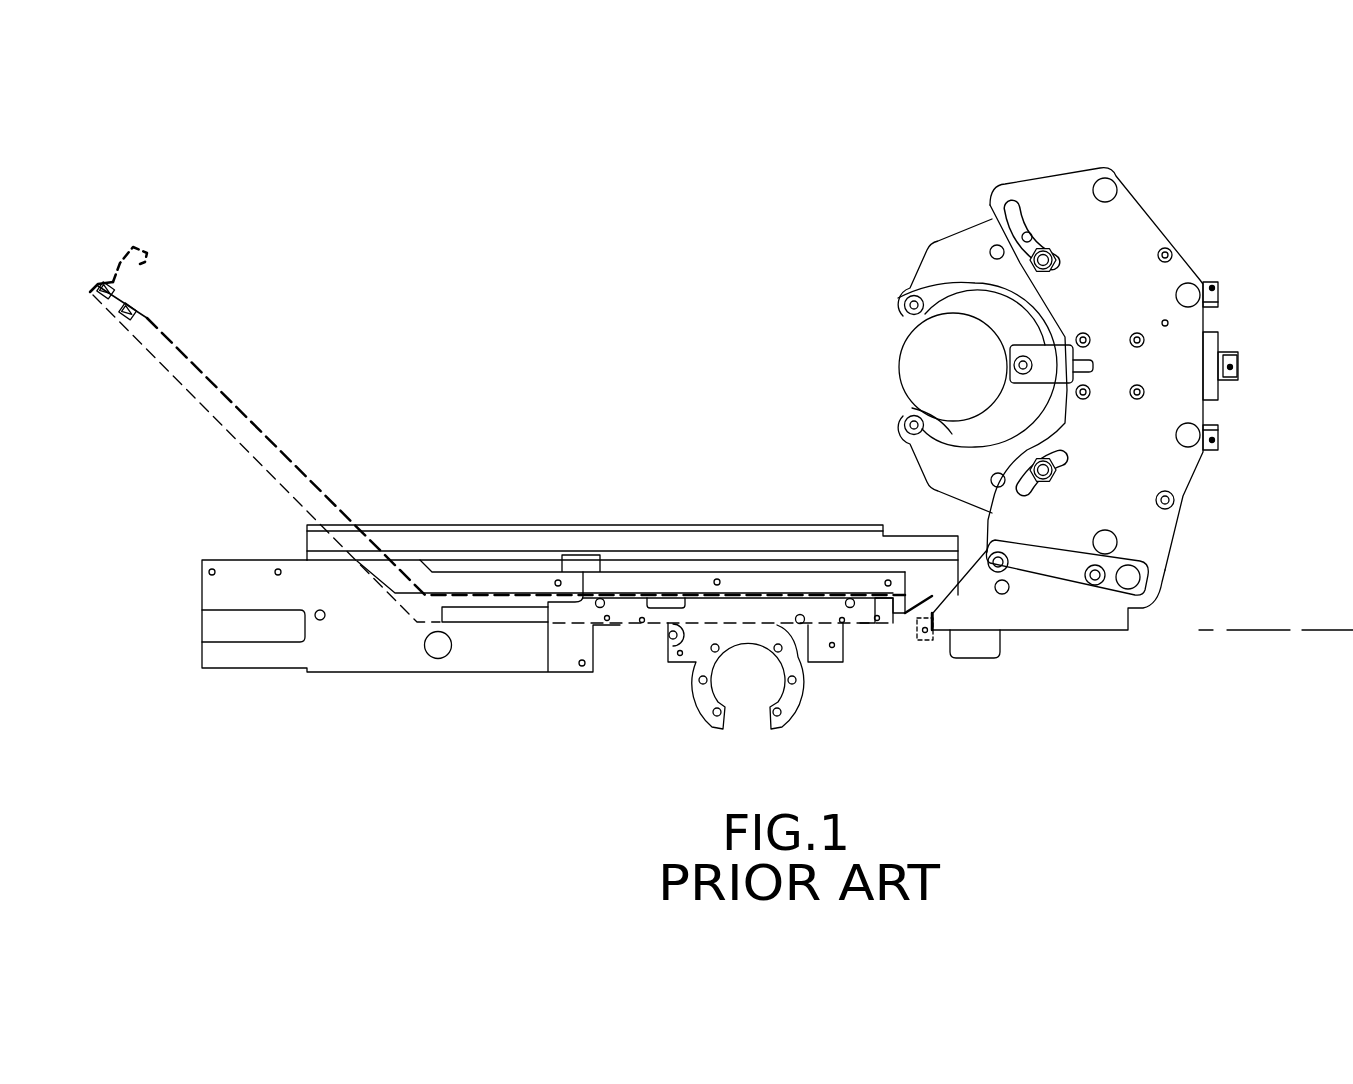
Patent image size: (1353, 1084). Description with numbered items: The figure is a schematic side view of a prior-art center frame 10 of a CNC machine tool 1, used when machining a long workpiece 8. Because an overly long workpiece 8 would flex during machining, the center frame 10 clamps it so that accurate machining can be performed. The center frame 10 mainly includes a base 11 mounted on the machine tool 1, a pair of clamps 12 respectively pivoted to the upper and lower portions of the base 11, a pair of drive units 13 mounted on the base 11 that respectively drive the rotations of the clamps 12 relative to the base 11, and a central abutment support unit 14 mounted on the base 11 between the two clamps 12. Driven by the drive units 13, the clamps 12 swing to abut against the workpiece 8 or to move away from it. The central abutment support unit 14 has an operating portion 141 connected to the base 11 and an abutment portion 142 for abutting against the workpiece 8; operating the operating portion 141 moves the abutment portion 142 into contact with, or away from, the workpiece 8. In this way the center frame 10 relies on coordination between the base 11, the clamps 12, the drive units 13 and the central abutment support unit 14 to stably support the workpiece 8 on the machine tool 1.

The CNC machine tool 1 is at (856, 665).
The workpiece 8 is at (920, 383).
The center frame 10 is at (1068, 610).
The base 11 is at (1127, 222).
The clamps 12 is at (950, 247).
The drive units 13 is at (1212, 290).
The central abutment support unit 14 is at (1218, 392).
The operating portion 141 is at (1212, 345).
The abutment portion 142 is at (1043, 352).